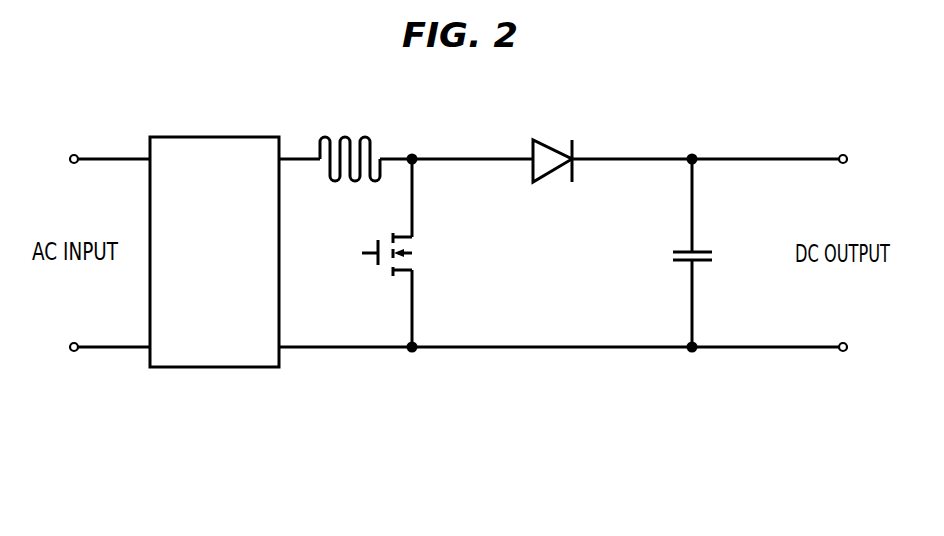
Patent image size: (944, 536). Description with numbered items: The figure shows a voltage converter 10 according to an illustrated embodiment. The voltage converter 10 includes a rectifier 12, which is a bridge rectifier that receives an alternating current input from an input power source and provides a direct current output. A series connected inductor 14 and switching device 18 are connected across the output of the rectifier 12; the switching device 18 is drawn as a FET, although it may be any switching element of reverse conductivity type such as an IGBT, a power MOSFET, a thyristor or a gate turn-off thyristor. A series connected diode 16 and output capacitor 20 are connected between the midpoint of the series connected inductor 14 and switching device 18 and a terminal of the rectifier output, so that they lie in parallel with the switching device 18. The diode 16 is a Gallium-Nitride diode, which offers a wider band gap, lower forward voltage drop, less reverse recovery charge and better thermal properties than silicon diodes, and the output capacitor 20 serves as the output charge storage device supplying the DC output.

The voltage converter 10 is at (782, 432).
The rectifier 12 is at (165, 137).
The inductor 14 is at (333, 170).
The diode 16 is at (553, 172).
The switching device 18 is at (378, 247).
The output capacitor 20 is at (678, 262).